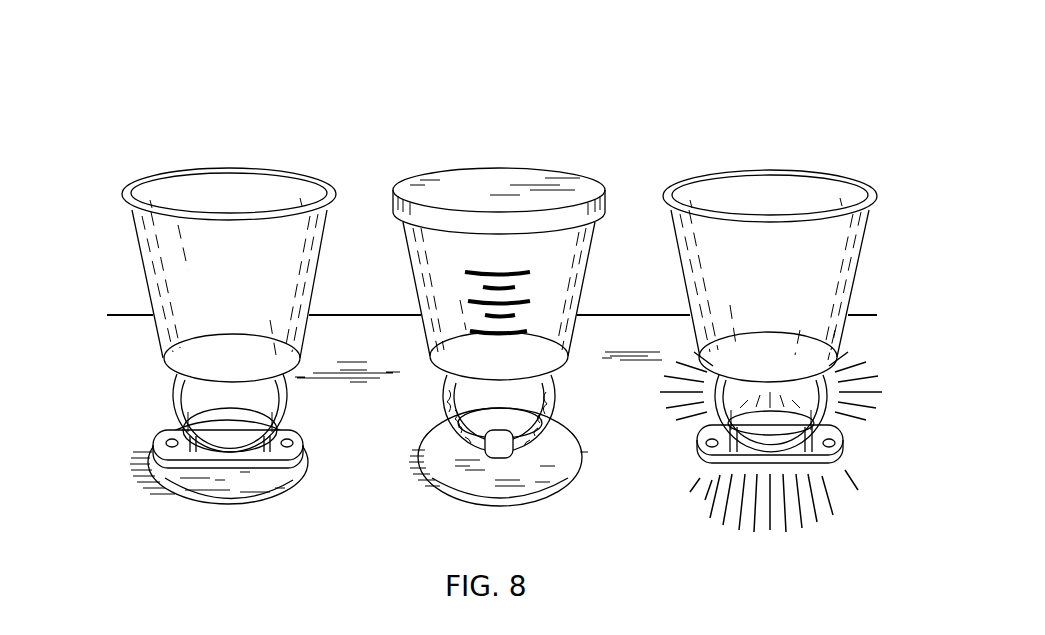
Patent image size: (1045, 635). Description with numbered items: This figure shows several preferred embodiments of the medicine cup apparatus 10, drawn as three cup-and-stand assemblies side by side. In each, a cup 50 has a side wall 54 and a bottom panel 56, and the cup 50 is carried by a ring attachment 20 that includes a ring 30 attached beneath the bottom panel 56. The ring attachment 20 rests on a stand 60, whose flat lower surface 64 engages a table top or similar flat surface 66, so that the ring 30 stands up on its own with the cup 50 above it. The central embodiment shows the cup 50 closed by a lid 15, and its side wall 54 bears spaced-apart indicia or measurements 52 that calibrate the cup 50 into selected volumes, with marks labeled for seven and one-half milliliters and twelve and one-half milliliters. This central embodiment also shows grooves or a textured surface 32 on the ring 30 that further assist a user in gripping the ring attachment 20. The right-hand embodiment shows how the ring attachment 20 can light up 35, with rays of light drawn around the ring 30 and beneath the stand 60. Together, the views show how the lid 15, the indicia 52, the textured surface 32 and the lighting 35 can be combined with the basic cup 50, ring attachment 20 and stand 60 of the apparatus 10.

The medicine cup apparatus 10 is at (123, 120).
The lid 15 is at (470, 197).
The ring attachment 20 is at (123, 389).
The ring 30 is at (267, 410).
The grooves/textured surface 32 is at (457, 430).
The light up 35 is at (806, 541).
The cup 50 is at (160, 280).
The indicia or measurements 52 is at (487, 318).
The side wall 54 is at (237, 296).
The bottom panel 56 is at (237, 367).
The stand 60 is at (125, 493).
The flat lower surface 64 is at (287, 513).
The flat surface 66 is at (365, 357).